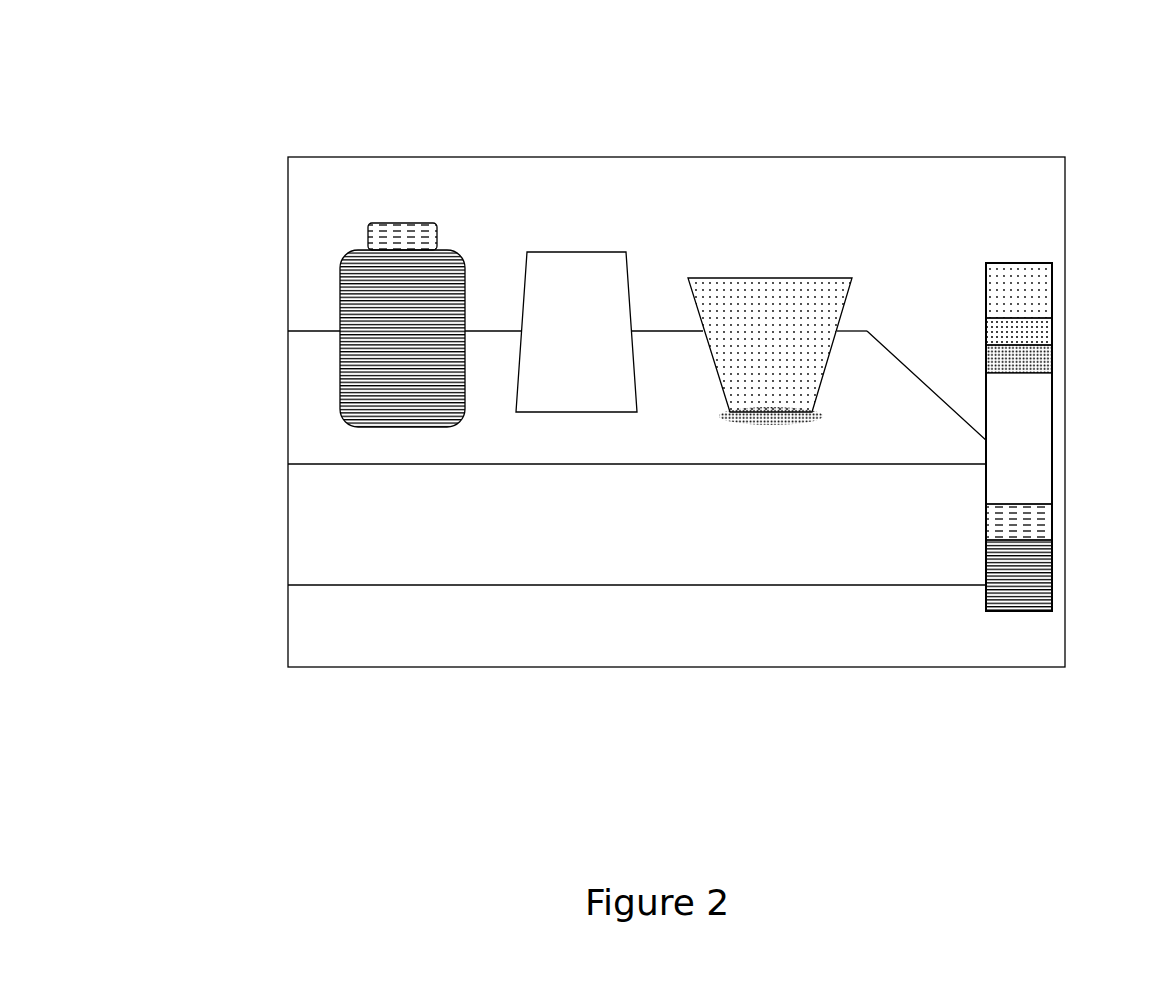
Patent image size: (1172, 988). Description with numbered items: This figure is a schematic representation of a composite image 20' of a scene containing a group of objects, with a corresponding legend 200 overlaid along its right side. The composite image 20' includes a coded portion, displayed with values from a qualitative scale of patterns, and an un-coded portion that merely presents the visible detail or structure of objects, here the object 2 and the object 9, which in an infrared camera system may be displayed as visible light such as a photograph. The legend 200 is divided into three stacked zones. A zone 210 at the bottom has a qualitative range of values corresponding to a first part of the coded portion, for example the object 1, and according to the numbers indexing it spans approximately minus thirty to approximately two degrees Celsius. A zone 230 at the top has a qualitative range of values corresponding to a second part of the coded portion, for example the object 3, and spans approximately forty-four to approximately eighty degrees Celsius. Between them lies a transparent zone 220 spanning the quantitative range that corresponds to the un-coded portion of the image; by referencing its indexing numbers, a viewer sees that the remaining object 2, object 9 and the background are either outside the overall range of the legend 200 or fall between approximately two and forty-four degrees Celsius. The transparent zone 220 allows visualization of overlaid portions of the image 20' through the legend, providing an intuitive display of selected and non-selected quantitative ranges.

The composite image 20' is at (676, 347).
The object 1 is at (378, 200).
The object 2 is at (601, 225).
The object 3 is at (802, 252).
The object 9 is at (316, 533).
The legend 200 is at (1046, 245).
The zone 230 is at (1056, 264).
The transparent zone 220 is at (1056, 375).
The zone 210 is at (1056, 506).